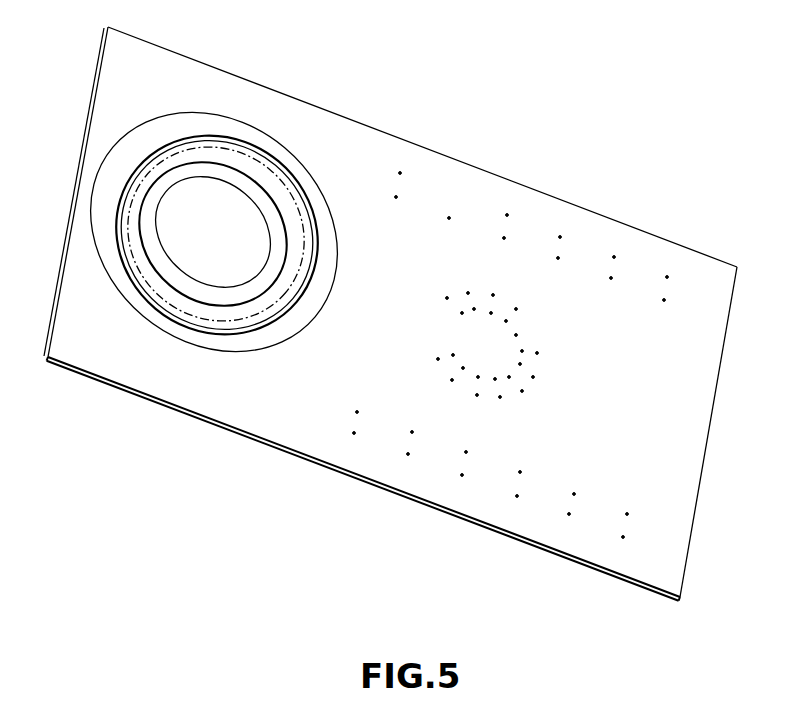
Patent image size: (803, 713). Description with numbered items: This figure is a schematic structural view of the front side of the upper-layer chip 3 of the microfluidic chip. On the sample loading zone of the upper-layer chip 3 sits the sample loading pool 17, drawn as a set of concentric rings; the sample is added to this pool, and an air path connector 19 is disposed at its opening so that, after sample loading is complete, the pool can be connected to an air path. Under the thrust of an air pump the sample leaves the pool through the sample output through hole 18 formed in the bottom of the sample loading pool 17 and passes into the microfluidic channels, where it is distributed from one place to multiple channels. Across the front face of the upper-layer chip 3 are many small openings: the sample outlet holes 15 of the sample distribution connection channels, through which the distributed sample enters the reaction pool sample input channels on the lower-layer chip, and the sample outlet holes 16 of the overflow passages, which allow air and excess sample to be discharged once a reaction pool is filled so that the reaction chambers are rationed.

The upper-layer chip 3 is at (643, 445).
The sample outlet hole of a sample distribution connection channel 15 is at (530, 333).
The sample outlet hole of an overflow passage 16 is at (452, 192).
The sample loading pool 17 is at (197, 184).
The sample output through hole of the sample loading pool 18 is at (205, 238).
The air path connector 19 is at (188, 137).